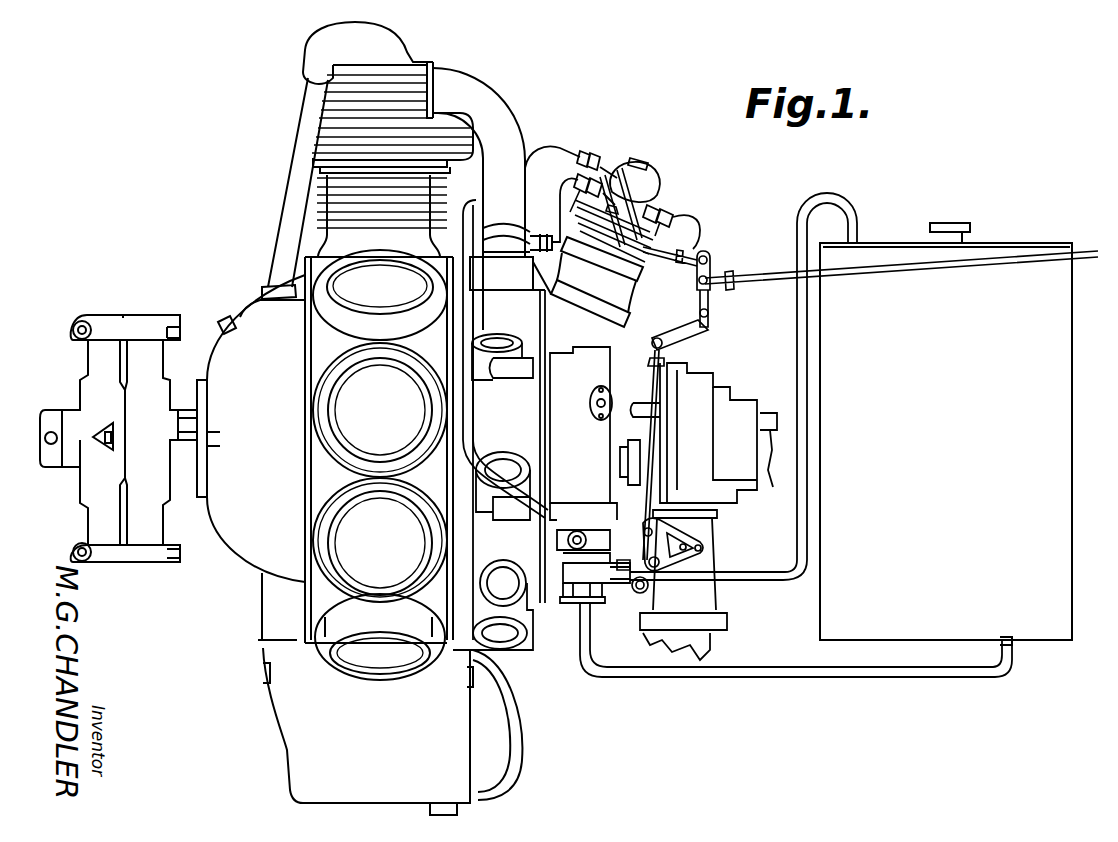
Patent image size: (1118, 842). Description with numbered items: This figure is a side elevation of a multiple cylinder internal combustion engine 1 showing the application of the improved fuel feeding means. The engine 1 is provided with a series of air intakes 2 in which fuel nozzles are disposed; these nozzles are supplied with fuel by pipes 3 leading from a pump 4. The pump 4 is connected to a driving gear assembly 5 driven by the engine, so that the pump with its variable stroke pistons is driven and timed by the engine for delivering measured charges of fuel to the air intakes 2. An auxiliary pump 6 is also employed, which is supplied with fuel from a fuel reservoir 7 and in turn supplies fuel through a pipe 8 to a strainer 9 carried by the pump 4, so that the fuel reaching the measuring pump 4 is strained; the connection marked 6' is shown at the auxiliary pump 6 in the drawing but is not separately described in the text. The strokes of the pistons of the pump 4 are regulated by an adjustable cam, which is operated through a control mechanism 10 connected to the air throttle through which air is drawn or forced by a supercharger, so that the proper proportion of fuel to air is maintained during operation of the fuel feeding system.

The internal combustion engine 1 is at (281, 418).
The air intakes 2 is at (470, 90).
The pipes 3 is at (562, 168).
The pump 4 is at (655, 236).
The driving gear assembly 5 is at (588, 282).
The auxiliary pump 6 is at (594, 495).
The fuel pipe from tank 6' is at (743, 386).
The fuel reservoir 7 is at (946, 434).
The pipe 8 is at (463, 420).
The strainer 9 is at (633, 183).
The control mechanism 10 is at (683, 329).